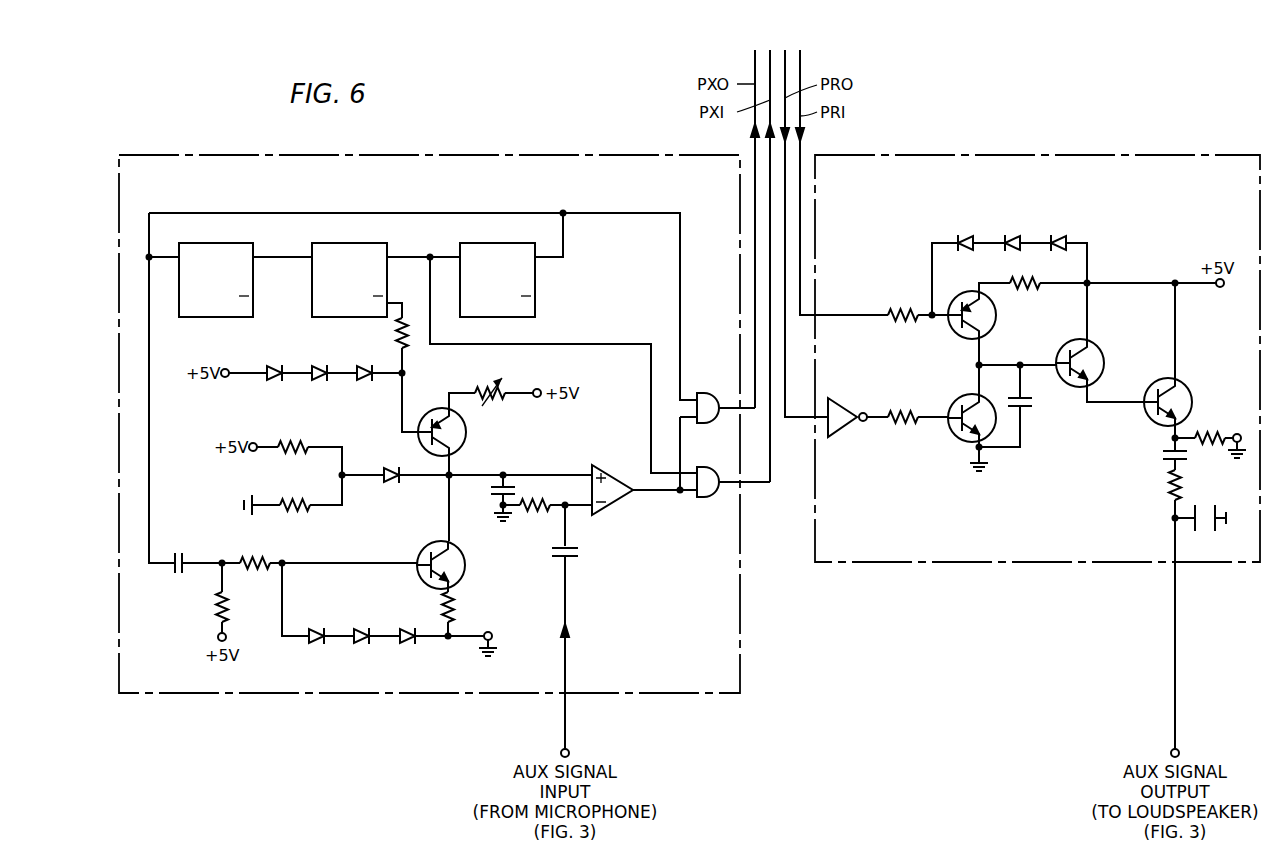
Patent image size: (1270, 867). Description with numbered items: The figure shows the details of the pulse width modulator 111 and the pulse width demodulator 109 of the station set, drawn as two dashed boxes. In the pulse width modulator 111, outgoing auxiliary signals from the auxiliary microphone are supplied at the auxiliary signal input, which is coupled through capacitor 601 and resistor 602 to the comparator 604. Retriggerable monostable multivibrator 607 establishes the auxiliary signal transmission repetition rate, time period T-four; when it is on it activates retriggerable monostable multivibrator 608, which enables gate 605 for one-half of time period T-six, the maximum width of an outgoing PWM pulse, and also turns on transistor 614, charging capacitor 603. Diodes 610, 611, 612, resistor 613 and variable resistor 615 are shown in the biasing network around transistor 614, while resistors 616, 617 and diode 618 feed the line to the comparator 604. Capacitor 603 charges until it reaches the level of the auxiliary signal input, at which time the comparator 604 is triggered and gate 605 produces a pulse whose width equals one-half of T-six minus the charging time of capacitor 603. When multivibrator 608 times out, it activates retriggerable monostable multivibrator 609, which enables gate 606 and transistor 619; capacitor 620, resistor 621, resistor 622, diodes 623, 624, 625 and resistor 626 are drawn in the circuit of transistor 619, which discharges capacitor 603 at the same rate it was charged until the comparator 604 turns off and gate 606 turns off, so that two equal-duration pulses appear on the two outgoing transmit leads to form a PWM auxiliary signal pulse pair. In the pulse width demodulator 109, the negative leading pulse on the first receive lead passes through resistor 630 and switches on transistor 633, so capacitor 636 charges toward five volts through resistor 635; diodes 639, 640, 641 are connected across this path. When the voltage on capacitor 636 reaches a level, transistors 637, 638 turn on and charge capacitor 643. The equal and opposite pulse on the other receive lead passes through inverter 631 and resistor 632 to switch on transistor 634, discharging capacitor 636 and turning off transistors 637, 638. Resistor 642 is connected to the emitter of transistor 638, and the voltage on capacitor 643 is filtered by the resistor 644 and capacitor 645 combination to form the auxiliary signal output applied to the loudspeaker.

The pulse width modulator 111 is at (598, 154).
The pulse width demodulator 109 is at (1113, 154).
The capacitor 601 is at (578, 552).
The resistor 602 is at (538, 500).
The capacitor 603 is at (489, 492).
The comparator 604 is at (622, 464).
The gate 605 is at (703, 498).
The gate 606 is at (705, 393).
The retriggerable monostable multivibrator 607 is at (212, 243).
The retriggerable monostable multivibrator 608 is at (345, 243).
The retriggerable monostable multivibrator 609 is at (493, 243).
The diode 610 is at (271, 364).
The diode 611 is at (318, 364).
The diode 612 is at (364, 364).
The resistor 613 is at (408, 340).
The transistor 614 is at (466, 436).
The variable resistor 615 is at (493, 404).
The resistor 616 is at (290, 442).
The resistor 617 is at (296, 500).
The diode 618 is at (393, 486).
The transistor 619 is at (465, 565).
The capacitor 620 is at (178, 556).
The resistor 621 is at (214, 607).
The resistor 622 is at (255, 556).
The diode 623 is at (318, 647).
The diode 624 is at (362, 647).
The diode 625 is at (408, 647).
The resistor 626 is at (456, 607).
The resistor 630 is at (903, 305).
The inverter 631 is at (856, 393).
The resistor 632 is at (901, 408).
The transistor 633 is at (954, 337).
The transistor 634 is at (955, 442).
The resistor 635 is at (1026, 294).
The capacitor 636 is at (1034, 402).
The transistor 637 is at (1057, 348).
The transistor 638 is at (1149, 382).
The diode 639 is at (966, 232).
The diode 640 is at (1012, 232).
The diode 641 is at (1059, 232).
The resistor 642 is at (1208, 448).
The capacitor 643 is at (1160, 455).
The resistor 644 is at (1163, 485).
The capacitor 645 is at (1196, 532).